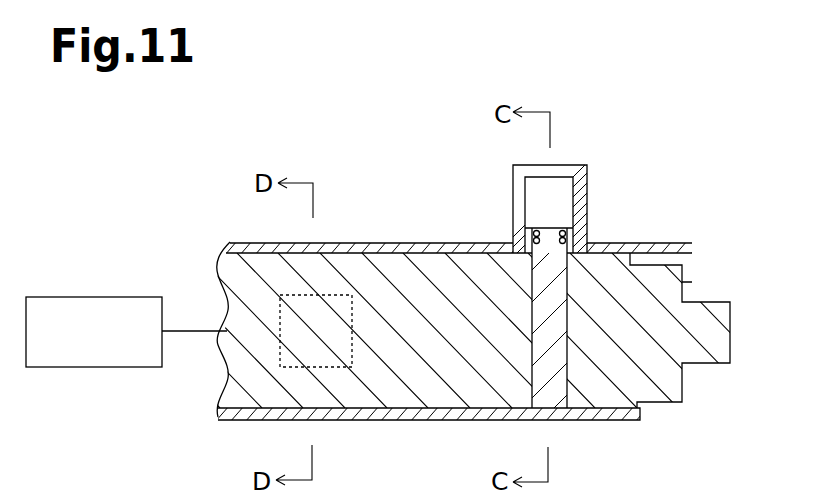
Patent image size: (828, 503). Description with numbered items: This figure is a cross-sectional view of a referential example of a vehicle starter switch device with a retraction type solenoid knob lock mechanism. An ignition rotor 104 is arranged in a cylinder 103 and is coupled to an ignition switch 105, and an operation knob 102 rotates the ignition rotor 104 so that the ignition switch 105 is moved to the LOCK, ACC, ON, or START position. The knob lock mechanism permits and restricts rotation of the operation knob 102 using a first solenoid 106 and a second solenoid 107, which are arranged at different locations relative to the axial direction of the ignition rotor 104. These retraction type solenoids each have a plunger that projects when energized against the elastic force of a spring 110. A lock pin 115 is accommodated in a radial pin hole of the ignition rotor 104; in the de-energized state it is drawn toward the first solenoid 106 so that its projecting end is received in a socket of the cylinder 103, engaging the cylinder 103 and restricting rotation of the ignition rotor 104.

The operation knob 102 is at (716, 341).
The cylinder 103 is at (413, 422).
The ignition rotor 104 is at (343, 262).
The ignition switch 105 is at (92, 296).
The first solenoid 106 is at (566, 176).
The second solenoid 107 is at (354, 308).
The spring 110 is at (588, 227).
The lock pin 115 is at (572, 422).